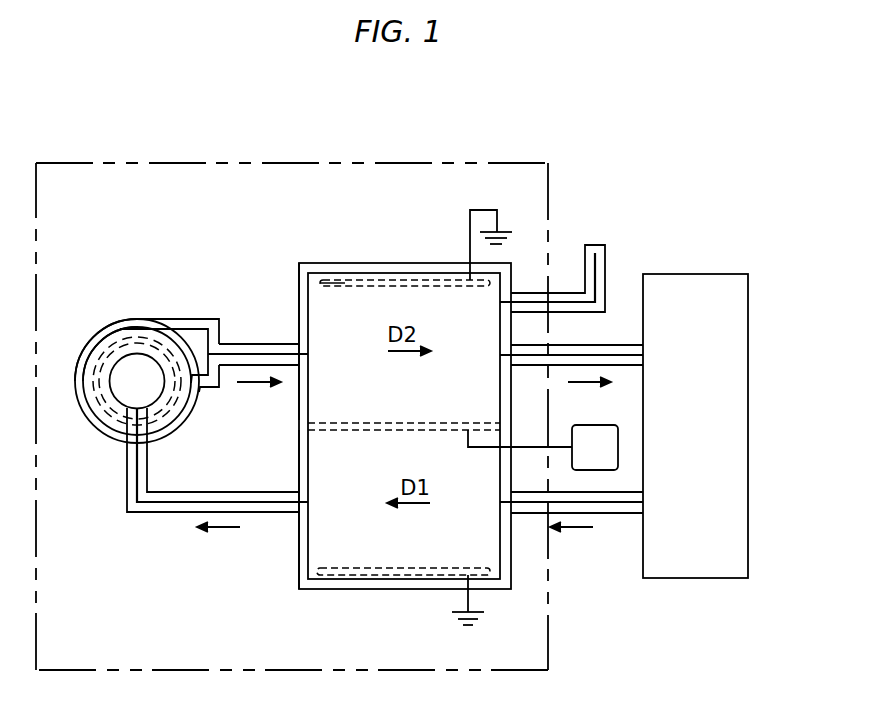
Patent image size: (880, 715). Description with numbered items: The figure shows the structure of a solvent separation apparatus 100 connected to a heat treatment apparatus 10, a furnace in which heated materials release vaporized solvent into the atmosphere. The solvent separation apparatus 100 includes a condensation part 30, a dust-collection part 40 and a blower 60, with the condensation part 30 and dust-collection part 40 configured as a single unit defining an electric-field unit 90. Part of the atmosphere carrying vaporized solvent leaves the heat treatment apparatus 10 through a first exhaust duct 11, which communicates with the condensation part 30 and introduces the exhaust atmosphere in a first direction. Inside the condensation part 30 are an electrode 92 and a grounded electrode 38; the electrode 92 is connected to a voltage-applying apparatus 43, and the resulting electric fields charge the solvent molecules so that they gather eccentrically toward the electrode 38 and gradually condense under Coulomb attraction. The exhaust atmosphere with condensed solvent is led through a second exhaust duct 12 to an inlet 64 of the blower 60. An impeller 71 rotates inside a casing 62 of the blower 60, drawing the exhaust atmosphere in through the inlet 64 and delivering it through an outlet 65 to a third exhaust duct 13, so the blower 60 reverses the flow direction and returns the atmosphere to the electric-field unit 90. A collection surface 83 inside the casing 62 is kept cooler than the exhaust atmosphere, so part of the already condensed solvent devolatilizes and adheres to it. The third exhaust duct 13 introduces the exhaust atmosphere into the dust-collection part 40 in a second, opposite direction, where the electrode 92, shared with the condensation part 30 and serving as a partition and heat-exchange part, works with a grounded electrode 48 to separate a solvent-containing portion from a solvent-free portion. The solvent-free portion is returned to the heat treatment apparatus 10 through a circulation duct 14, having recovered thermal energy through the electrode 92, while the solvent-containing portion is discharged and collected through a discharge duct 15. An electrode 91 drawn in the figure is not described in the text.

The solvent separation apparatus 100 is at (536, 160).
The heat treatment apparatus 10 is at (708, 273).
The first exhaust duct 11 is at (615, 503).
The second exhaust duct 12 is at (230, 502).
The third exhaust duct 13 is at (270, 353).
The circulation duct 14 is at (620, 355).
The discharge duct 15 is at (603, 256).
The condensation part 30 is at (320, 547).
The electrode 38 is at (342, 567).
The dust-collection part 40 is at (320, 305).
The voltage-applying apparatus 43 is at (606, 433).
The electrode 48 is at (348, 288).
The blower 60 is at (127, 320).
The casing 62 is at (157, 330).
The inlet 64 is at (110, 405).
The outlet 65 is at (207, 330).
The impeller 71 is at (107, 342).
The collection surface 83 is at (86, 352).
The electric-field unit 90 is at (361, 255).
The second electrode 91 is at (400, 274).
The electrode 92 is at (378, 421).